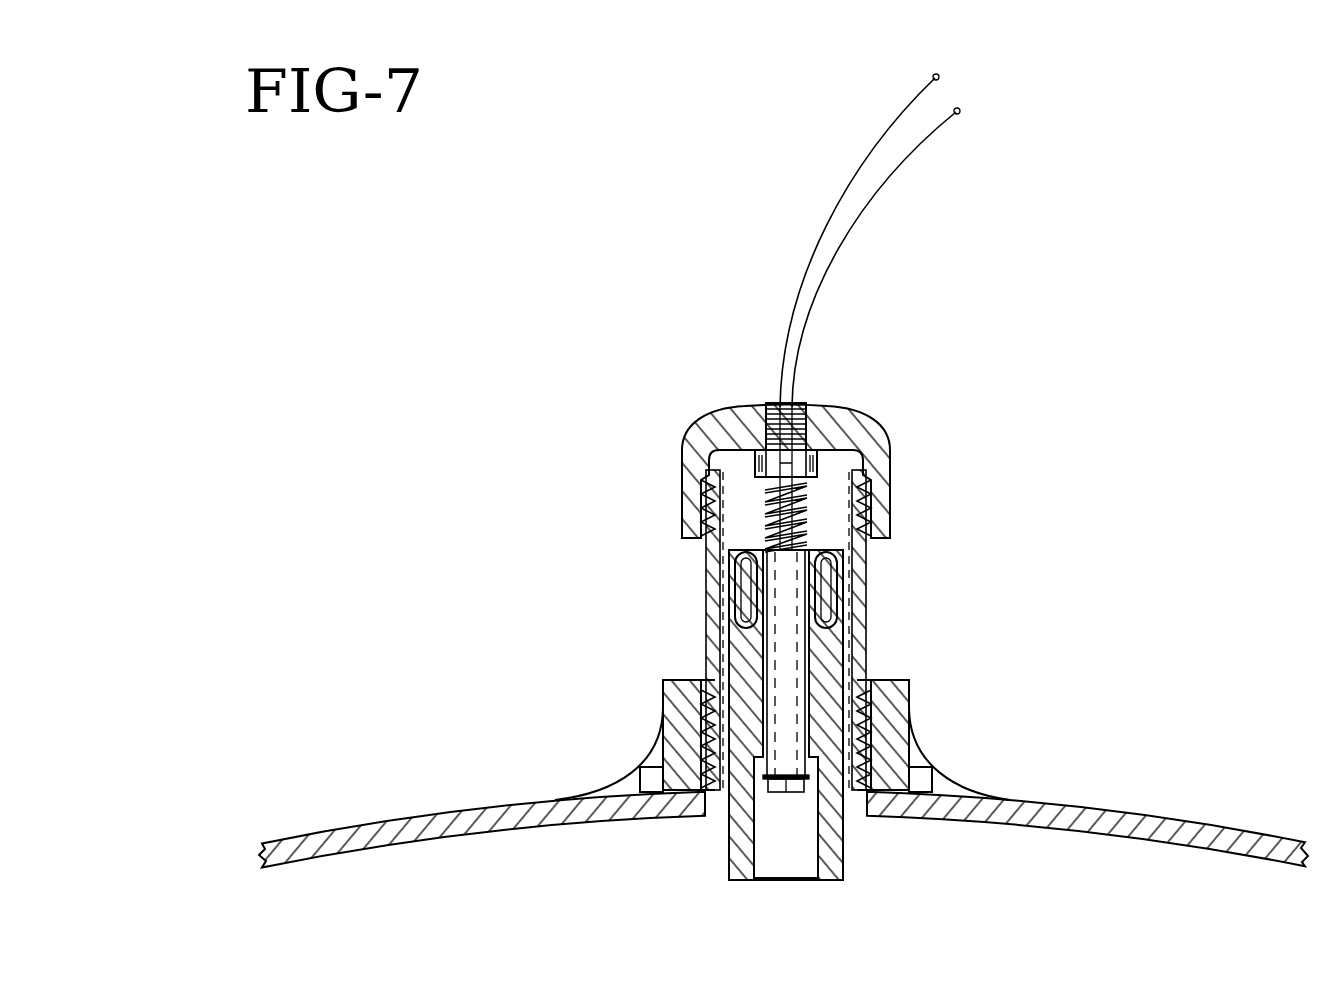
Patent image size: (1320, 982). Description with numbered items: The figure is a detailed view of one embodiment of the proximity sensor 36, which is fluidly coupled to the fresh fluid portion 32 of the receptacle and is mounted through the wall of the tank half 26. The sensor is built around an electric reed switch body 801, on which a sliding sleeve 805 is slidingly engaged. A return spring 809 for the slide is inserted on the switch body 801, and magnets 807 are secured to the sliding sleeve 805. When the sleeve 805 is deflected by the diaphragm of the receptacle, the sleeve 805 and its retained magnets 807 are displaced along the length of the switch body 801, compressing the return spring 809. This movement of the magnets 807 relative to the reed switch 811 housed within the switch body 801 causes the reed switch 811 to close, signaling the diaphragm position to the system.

The proximity sensor 36 is at (852, 390).
The tank half 26 is at (1140, 805).
The fresh fluid portion 32 is at (1008, 857).
The reed switch body 801 is at (787, 653).
The sliding sleeve 805 is at (747, 652).
The magnets 807 is at (733, 590).
The return spring 809 is at (856, 492).
The reed switch 811 is at (810, 500).